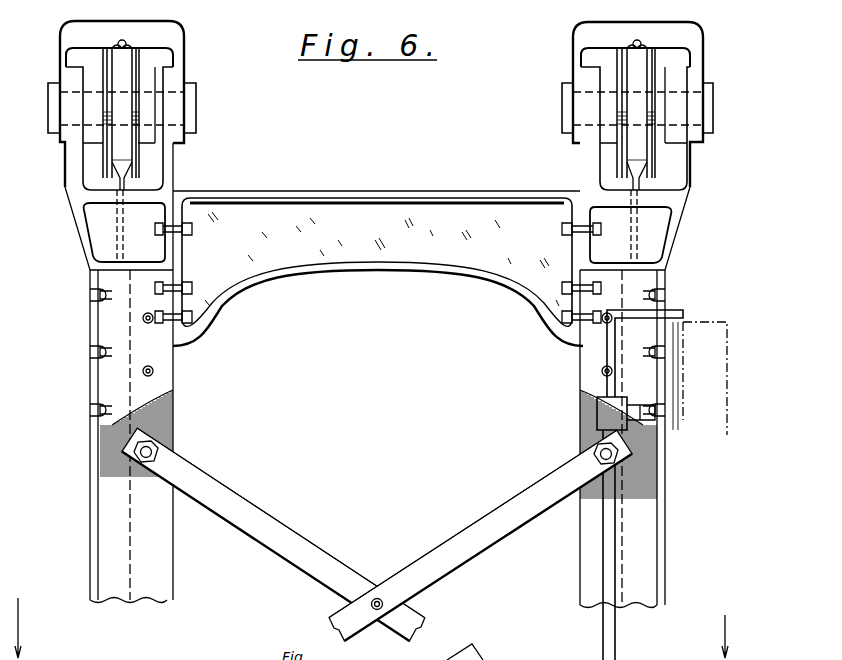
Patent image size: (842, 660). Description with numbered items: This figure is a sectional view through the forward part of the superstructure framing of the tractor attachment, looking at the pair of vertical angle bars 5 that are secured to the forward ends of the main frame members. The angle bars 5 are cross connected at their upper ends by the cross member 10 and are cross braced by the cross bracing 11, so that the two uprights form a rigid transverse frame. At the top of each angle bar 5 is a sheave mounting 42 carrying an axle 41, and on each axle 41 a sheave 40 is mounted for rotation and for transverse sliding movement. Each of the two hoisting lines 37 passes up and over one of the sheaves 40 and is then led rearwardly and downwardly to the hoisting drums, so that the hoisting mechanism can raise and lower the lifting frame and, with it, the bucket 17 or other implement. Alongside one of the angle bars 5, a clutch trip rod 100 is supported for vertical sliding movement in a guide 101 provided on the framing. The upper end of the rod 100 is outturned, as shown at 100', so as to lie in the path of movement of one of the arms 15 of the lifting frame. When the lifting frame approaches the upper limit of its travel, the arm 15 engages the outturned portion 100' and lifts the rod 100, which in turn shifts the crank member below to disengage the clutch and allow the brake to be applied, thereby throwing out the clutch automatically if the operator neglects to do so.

The vertical angle bars 5 is at (93, 515).
The cross member 10 is at (378, 189).
The cross bracing 11 is at (265, 512).
The arm 15 is at (722, 380).
The bucket 17 is at (388, 629).
The hoisting line 37 is at (125, 183).
The sheave 40 is at (121, 116).
The axle 41 is at (200, 101).
The sheave mounting 42 is at (168, 153).
The clutch trip rod 100 is at (566, 545).
The outturned upper end of the rod 100' is at (679, 334).
The guide 101 is at (598, 418).